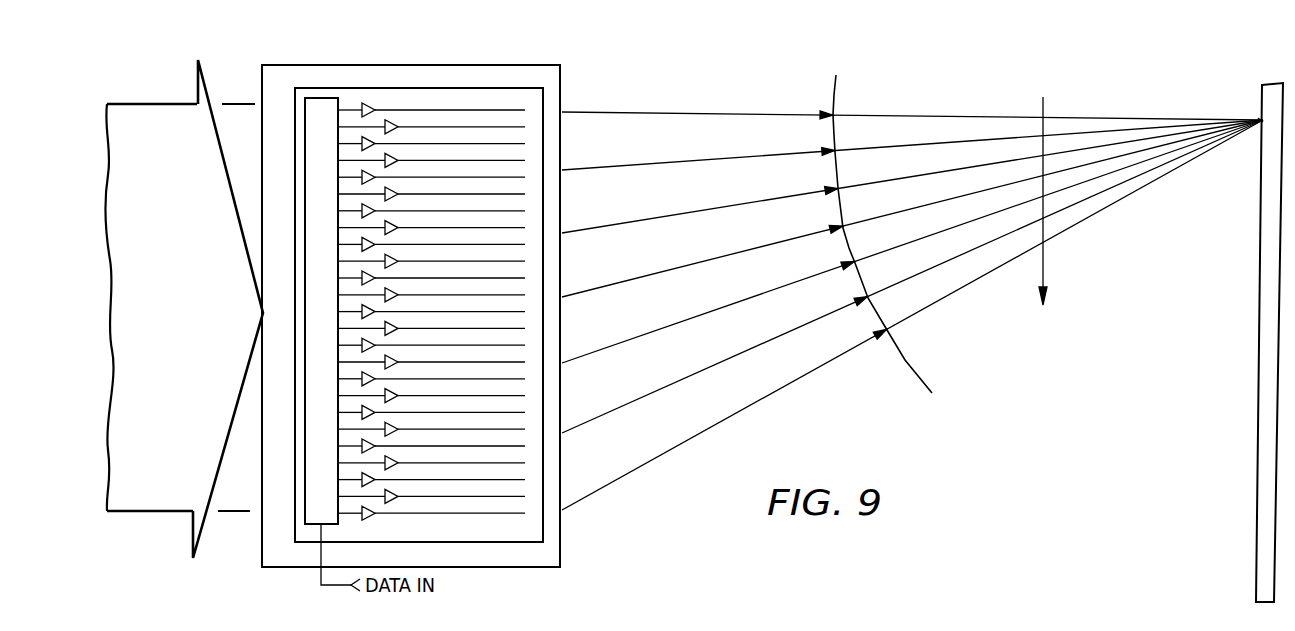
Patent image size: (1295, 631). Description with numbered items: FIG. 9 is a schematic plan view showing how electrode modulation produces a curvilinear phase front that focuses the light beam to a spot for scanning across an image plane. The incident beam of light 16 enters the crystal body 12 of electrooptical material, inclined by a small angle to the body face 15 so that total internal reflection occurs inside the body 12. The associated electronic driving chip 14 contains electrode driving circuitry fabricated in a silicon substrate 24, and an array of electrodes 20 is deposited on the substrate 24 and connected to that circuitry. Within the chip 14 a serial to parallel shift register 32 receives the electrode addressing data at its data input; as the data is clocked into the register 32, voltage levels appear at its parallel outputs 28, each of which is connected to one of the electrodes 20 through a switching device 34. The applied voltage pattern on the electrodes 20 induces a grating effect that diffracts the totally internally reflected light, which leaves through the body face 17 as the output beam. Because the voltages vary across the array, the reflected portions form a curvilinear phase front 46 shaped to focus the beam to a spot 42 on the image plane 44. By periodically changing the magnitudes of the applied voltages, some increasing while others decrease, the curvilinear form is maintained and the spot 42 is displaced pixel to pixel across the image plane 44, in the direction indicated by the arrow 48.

The crystal body 12 is at (512, 65).
The electronic driving chip 14 is at (402, 76).
The body face 15 is at (257, 538).
The incident beam of light 16 is at (147, 112).
The body face 17 is at (562, 545).
The electrodes 20 is at (525, 111).
The substrate 24 is at (490, 537).
The outputs 28 is at (350, 516).
The register 32 is at (313, 143).
The switching device 34 is at (368, 514).
The spot 42 is at (1260, 125).
The image plane 44 is at (1262, 96).
The phase front 46 is at (838, 92).
The arrow 48 is at (1045, 102).